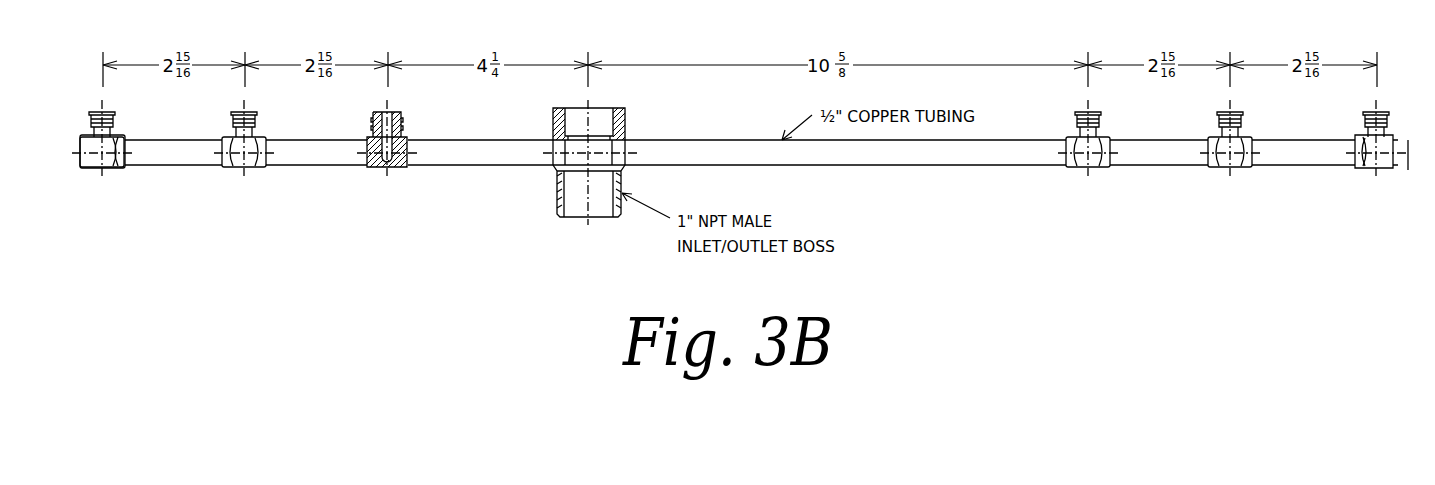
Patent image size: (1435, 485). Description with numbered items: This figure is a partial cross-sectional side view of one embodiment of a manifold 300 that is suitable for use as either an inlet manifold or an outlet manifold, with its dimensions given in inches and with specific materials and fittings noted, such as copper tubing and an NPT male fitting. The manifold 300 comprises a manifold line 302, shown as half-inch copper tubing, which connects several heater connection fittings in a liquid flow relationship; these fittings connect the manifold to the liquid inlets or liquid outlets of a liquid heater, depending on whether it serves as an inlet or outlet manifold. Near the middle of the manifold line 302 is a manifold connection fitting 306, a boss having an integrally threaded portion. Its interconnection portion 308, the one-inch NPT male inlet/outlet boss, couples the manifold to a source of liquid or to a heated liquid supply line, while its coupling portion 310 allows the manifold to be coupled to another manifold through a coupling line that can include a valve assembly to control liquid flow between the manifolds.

The manifold 300 is at (304, 232).
The manifold line 302 is at (860, 158).
The manifold connection fitting 306 is at (611, 150).
The interconnection portion 308 is at (580, 210).
The coupling portion 310 is at (581, 122).